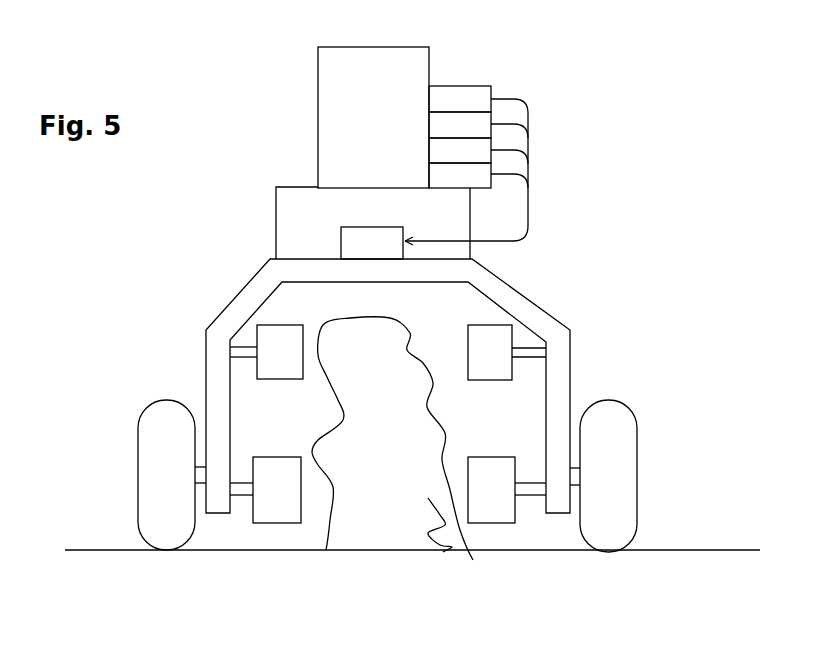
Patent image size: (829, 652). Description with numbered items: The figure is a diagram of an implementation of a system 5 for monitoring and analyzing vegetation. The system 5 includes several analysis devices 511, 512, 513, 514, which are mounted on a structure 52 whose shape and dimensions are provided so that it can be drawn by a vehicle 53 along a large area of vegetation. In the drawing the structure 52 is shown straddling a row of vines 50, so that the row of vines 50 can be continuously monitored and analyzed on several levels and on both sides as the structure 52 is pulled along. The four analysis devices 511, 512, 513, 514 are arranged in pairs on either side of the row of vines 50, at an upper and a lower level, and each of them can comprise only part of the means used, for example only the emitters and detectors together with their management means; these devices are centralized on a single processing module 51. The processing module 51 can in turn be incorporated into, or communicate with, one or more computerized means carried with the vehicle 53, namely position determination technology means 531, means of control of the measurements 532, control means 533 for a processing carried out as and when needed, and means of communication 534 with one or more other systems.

The system 5 is at (590, 207).
The row of vines 50 is at (473, 560).
The processing module 51 is at (434, 186).
The structure 52 is at (255, 297).
The vehicle 53 is at (276, 204).
The analysis device 511 is at (283, 379).
The analysis device 512 is at (283, 457).
The analysis device 513 is at (500, 380).
The analysis device 514 is at (497, 457).
The position determination technology means 531 is at (478, 175).
The means of control of the measurements 532 is at (478, 151).
The control means 533 is at (478, 125).
The means of communication 534 is at (478, 99).